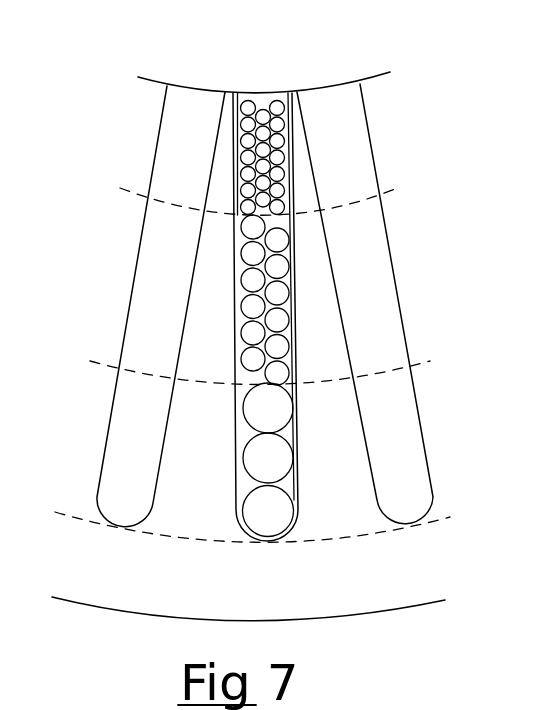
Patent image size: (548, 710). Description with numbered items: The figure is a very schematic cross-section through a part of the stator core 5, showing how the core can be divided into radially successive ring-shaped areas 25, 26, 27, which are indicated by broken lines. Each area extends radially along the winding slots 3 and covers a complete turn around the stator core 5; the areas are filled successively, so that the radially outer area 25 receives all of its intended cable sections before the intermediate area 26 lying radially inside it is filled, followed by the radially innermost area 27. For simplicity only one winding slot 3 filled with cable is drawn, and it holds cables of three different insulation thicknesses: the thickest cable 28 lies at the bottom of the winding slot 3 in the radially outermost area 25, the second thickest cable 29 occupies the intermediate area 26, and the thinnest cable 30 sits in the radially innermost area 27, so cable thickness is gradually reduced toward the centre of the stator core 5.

The winding slot 3 is at (192, 103).
The thinnest cable 30 is at (250, 100).
The second thickest cable 29 is at (280, 268).
The thickest cable 28 is at (286, 460).
The radially innermost area 27 is at (137, 140).
The intermediate area 26 is at (110, 280).
The radially outer area 25 is at (77, 433).
The stator core 5 is at (83, 578).